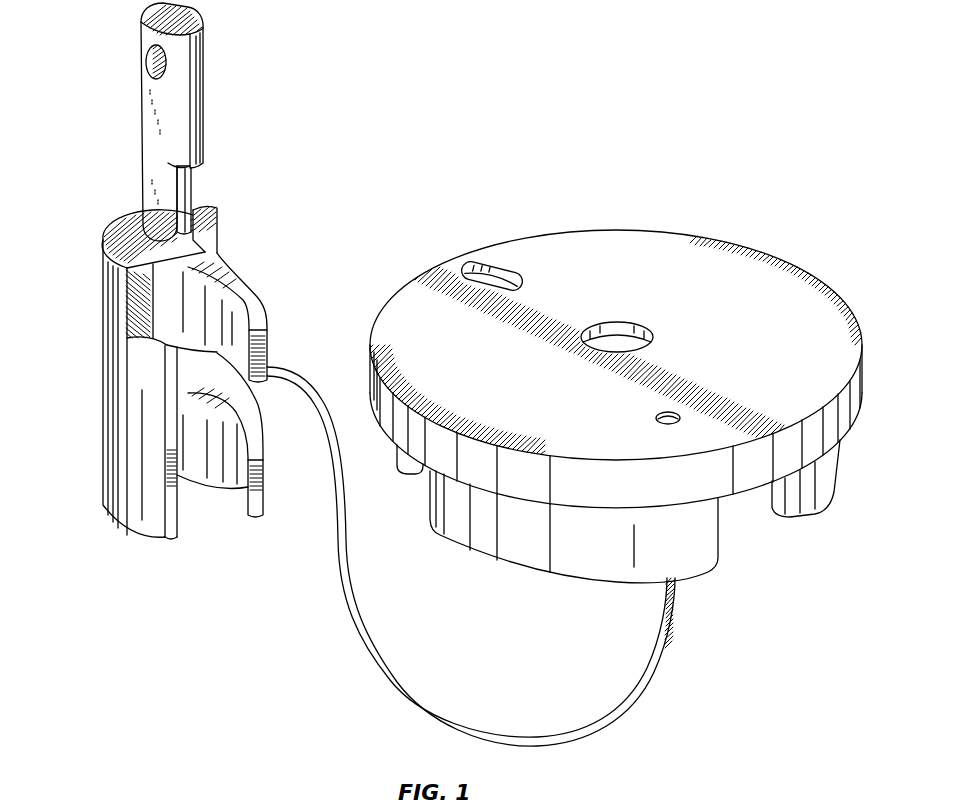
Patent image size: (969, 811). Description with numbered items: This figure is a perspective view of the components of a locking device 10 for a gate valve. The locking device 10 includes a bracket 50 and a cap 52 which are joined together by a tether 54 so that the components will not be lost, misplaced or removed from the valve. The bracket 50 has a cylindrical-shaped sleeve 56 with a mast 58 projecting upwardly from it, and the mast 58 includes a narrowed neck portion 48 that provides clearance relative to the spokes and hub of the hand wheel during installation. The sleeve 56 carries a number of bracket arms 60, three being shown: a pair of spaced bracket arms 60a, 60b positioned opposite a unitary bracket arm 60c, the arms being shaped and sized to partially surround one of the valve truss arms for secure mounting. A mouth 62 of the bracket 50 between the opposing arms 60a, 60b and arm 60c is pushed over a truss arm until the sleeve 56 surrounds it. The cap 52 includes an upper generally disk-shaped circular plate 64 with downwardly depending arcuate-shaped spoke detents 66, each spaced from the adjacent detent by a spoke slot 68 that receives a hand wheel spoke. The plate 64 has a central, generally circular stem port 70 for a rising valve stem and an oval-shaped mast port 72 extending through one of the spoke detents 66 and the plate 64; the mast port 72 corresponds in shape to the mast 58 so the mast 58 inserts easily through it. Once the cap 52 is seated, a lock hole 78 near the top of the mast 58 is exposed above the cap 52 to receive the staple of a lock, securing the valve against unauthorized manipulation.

The locking device 10 is at (575, 73).
The narrowed neck portion 48 is at (192, 180).
The bracket 50 is at (181, 396).
The cap 52 is at (615, 410).
The tether 54 is at (566, 728).
The sleeve 56 is at (100, 440).
The mast 58 is at (181, 122).
The bracket arms 60 is at (230, 420).
The bracket arm 60a is at (268, 328).
The bracket arm 60b is at (257, 515).
The unitary bracket arm 60c is at (151, 537).
The mouth 62 is at (212, 512).
The circular plate 64 is at (798, 348).
The spoke detents 66 is at (527, 576).
The spoke slot 68 is at (411, 491).
The stem port 70 is at (618, 325).
The mast port 72 is at (497, 272).
The lock hole 78 is at (150, 64).